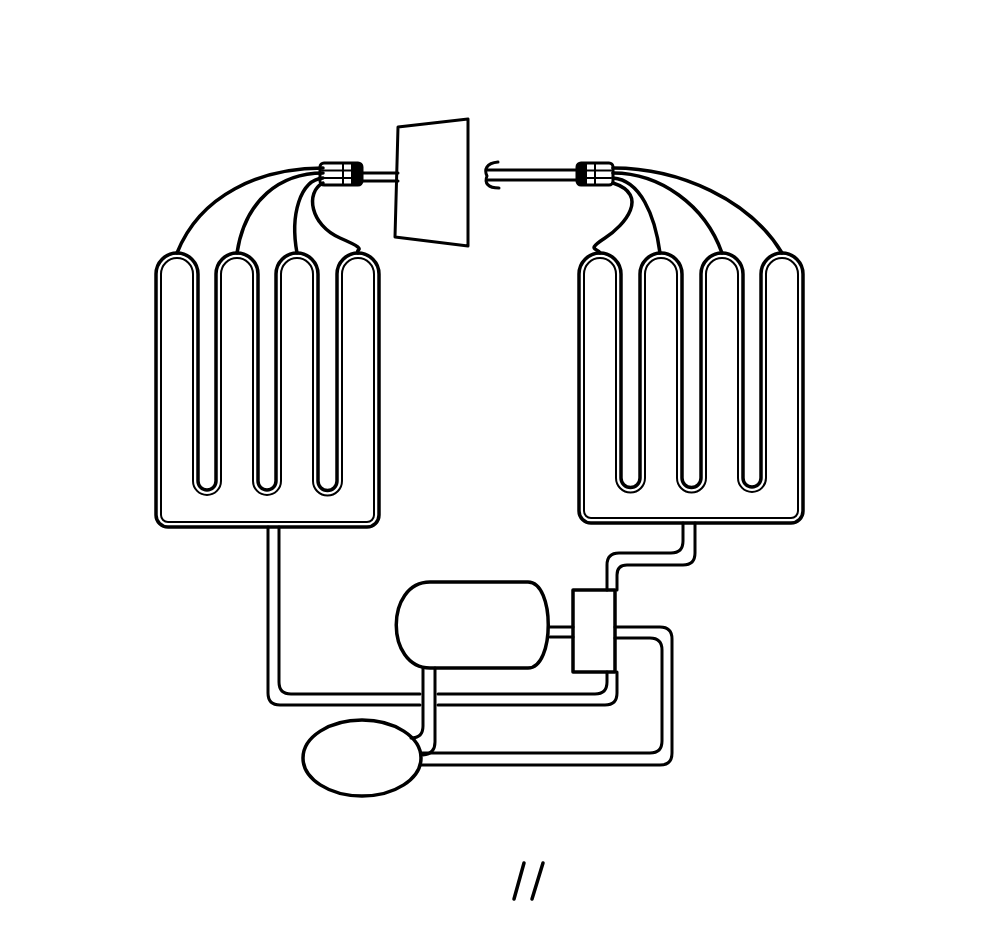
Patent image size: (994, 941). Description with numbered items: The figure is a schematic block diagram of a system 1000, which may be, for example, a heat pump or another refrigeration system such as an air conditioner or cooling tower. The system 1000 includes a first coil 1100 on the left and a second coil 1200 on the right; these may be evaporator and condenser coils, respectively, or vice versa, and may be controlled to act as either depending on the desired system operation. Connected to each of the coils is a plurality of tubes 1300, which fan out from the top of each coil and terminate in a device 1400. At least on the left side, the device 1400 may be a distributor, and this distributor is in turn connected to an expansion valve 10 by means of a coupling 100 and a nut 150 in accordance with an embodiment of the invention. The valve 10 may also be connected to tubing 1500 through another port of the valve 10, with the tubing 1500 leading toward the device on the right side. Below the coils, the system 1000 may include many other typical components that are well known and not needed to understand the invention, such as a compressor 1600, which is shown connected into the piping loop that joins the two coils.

The system 1000 is at (287, 51).
The expansion valve 10 is at (470, 120).
The coupling 100 is at (381, 170).
The nut 150 is at (350, 187).
The first coil 1100 is at (157, 423).
The second coil 1200 is at (803, 362).
The tubes 1300 is at (243, 181).
The device 1400 is at (347, 163).
The tubing 1500 is at (510, 167).
The compressor 1600 is at (457, 582).